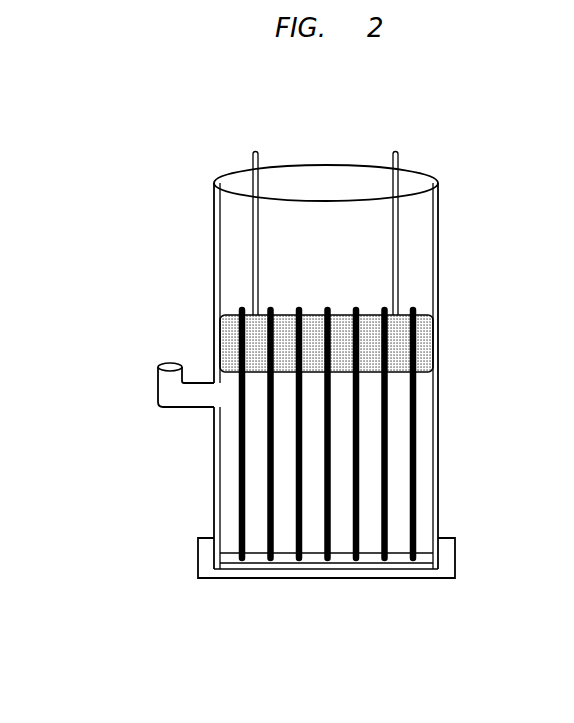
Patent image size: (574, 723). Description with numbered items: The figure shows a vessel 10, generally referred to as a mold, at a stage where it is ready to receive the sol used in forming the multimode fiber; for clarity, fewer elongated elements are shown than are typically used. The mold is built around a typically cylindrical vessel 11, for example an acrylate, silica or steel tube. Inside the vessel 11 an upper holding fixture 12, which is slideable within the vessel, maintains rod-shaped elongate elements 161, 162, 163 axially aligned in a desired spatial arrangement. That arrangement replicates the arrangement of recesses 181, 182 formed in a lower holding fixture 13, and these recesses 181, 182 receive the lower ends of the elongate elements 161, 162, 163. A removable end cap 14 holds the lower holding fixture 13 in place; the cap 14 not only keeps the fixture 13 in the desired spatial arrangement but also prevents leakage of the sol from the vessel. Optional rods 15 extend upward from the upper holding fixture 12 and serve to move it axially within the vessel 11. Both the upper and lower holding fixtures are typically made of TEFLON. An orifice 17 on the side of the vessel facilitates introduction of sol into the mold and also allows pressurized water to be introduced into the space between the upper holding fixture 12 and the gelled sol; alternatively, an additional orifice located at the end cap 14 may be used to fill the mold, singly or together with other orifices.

The vessel 10 is at (55, 218).
The vessel 11 is at (214, 272).
The upper holding fixture 12 is at (219, 340).
The lower holding fixture 13 is at (400, 563).
The removable end cap 14 is at (455, 572).
The rods 15 is at (255, 152).
The orifice 17 is at (159, 378).
The elongate element 161 is at (268, 448).
The elongate element 162 is at (357, 484).
The elongate element 163 is at (385, 513).
The recess 181 is at (330, 560).
The recess 182 is at (273, 560).